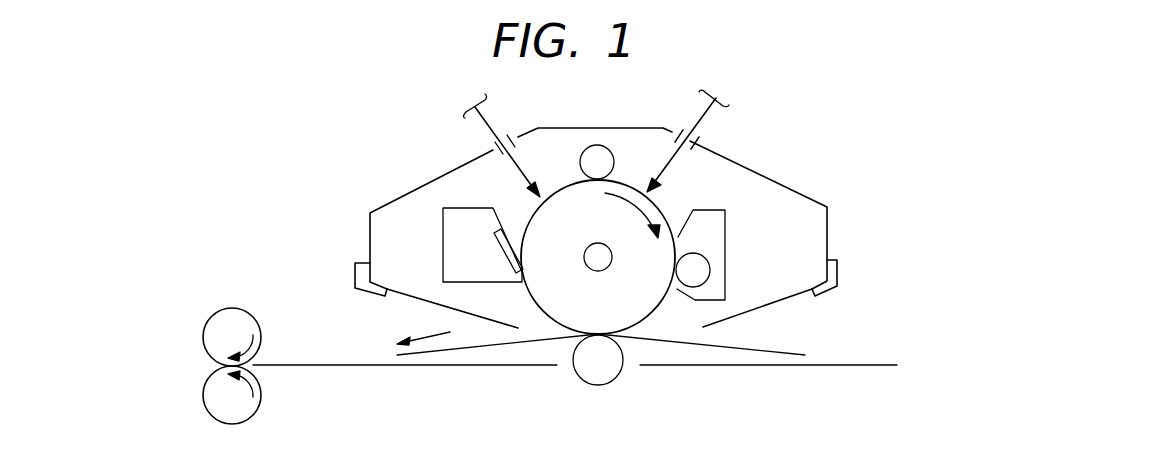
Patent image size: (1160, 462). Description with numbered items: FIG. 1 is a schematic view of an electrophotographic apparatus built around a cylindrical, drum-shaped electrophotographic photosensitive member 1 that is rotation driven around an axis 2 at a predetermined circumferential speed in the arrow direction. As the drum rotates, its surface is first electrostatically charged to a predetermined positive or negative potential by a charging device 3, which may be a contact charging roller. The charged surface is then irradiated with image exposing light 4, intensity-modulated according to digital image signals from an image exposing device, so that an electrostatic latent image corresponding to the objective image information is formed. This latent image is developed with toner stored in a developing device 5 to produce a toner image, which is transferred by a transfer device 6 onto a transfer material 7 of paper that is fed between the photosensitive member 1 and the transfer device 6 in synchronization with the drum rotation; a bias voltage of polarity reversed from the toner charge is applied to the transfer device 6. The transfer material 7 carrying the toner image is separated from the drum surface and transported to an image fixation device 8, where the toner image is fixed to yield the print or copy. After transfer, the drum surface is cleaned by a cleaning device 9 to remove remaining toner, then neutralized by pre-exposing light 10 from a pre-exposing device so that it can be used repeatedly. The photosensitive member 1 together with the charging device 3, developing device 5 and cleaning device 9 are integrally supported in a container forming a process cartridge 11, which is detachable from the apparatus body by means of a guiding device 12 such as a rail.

The electrophotographic photosensitive member 1 is at (532, 215).
The axis 2 is at (598, 272).
The charging device 3 is at (597, 144).
The image exposing light 4 is at (688, 126).
The developing device 5 is at (708, 208).
The transfer device 6 is at (598, 386).
The transfer material 7 is at (788, 354).
The image fixation device 8 is at (241, 308).
The cleaning device 9 is at (443, 238).
The pre-exposing light 10 is at (487, 125).
The process cartridge 11 is at (777, 183).
The guiding device 12 is at (355, 271).